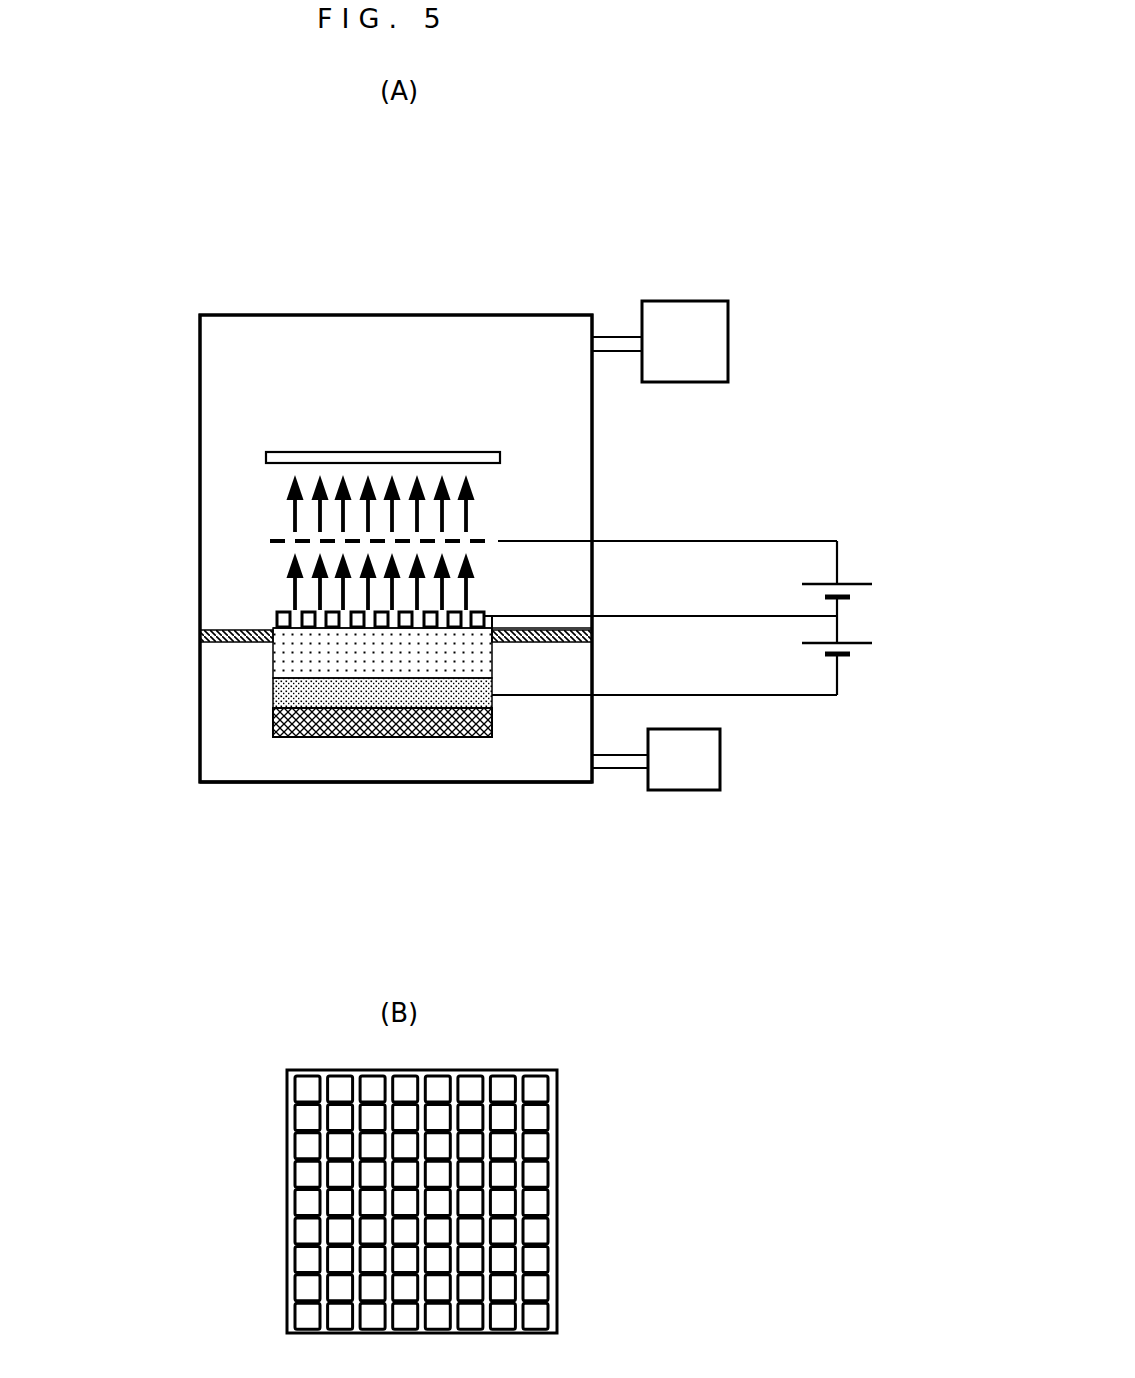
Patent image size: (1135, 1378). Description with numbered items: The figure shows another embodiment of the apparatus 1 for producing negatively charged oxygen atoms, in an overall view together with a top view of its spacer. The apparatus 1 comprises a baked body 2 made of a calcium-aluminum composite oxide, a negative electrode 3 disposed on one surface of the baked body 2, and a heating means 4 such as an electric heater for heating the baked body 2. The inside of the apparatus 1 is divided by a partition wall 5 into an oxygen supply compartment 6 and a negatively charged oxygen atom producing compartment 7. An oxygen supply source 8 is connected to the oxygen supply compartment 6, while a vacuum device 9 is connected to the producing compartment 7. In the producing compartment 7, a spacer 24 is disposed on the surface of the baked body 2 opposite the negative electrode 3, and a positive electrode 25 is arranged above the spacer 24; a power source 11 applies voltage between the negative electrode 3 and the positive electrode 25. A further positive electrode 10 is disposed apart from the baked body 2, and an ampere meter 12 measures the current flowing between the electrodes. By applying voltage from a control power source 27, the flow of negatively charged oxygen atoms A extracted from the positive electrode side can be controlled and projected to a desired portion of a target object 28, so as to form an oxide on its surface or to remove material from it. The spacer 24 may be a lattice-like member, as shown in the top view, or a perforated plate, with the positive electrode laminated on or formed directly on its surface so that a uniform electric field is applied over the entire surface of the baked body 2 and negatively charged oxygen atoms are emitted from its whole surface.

The apparatus for producing negatively charged oxygen atoms 1 is at (98, 245).
The negatively charged oxygen atom producing compartment 7 is at (283, 343).
The target object 28 is at (270, 457).
The negatively charged oxygen atoms A is at (360, 510).
The positive electrode 10 is at (472, 538).
The ampere meter 12 is at (755, 508).
The control power source 27 is at (873, 580).
The power source 11 is at (863, 653).
The vacuum device 9 is at (660, 341).
The oxygen supply source 8 is at (656, 759).
The positive electrode 25 is at (482, 610).
The spacer 24 is at (273, 623).
The partition wall 5 is at (273, 640).
The baked body 2 is at (285, 663).
The negative electrode 3 is at (270, 698).
The heating means 4 is at (273, 737).
The oxygen supply compartment 6 is at (353, 767).